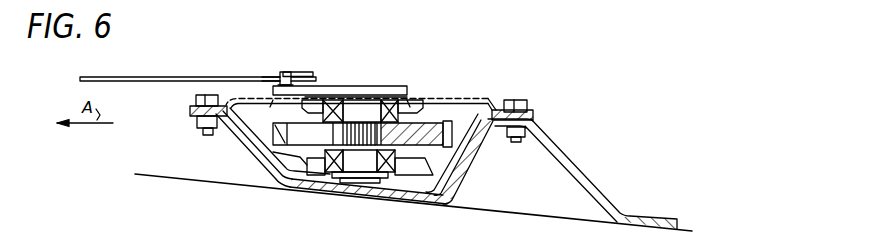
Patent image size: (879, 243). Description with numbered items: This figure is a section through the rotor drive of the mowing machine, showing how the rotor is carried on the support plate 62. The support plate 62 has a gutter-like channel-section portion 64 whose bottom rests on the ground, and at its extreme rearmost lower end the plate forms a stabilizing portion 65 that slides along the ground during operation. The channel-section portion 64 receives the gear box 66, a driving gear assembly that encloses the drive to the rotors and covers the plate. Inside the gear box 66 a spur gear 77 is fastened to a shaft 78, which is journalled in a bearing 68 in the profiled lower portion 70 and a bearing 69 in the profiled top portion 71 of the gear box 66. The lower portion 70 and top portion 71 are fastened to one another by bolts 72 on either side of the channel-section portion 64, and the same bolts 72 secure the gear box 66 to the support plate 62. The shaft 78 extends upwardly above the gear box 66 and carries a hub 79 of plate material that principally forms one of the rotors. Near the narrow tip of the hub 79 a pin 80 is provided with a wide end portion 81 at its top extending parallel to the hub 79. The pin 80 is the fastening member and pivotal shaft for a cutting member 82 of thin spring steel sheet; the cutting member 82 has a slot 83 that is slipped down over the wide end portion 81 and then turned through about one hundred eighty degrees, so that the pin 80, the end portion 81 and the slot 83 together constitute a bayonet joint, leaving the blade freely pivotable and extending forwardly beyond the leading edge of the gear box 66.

The support plate 62 is at (268, 185).
The channel-section portion 64 is at (407, 200).
The stabilizing portion 65 is at (585, 178).
The gear box 66 is at (495, 92).
The bearing 68 is at (327, 180).
The bearing 69 is at (415, 98).
The lower portion 70 is at (255, 150).
The top portion 71 is at (467, 98).
The bolts 72 is at (205, 133).
The spur gear 77 is at (467, 142).
The shaft 78 is at (353, 107).
The hub 79 is at (343, 85).
The pin 80 is at (287, 72).
The wide end portion 81 is at (305, 73).
The cutting member 82 is at (148, 72).
The slot 83 is at (270, 77).